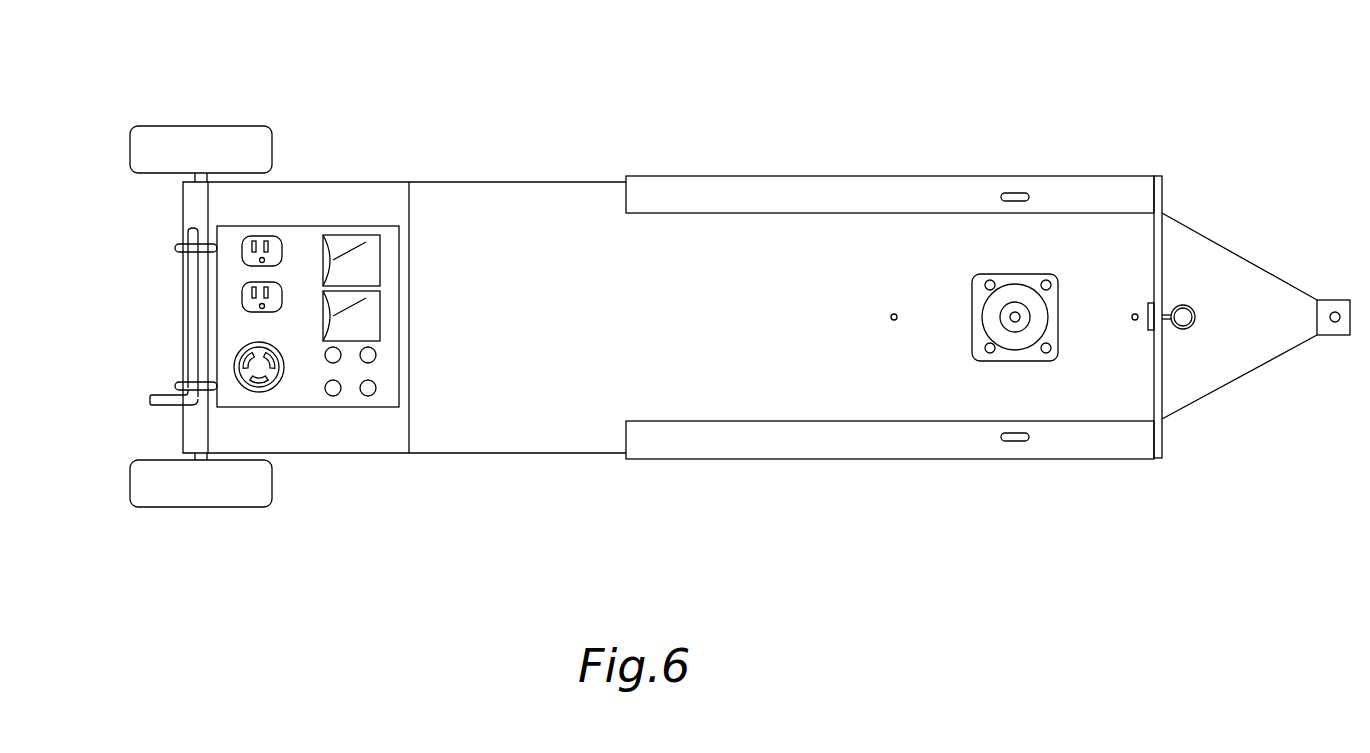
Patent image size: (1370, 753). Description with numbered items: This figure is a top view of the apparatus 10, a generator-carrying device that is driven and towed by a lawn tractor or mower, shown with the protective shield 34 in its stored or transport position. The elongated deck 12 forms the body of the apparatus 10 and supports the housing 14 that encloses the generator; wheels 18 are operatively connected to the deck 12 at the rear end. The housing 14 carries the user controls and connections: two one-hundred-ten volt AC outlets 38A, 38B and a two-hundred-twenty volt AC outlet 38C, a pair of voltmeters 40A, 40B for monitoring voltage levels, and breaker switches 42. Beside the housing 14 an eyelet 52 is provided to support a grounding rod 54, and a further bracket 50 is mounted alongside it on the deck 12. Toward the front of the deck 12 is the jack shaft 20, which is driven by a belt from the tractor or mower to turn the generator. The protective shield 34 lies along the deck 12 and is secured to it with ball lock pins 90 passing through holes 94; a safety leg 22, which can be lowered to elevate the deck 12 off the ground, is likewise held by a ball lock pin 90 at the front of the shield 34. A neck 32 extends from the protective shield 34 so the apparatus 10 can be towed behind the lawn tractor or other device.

The apparatus 10 is at (918, 86).
The deck 12 is at (570, 180).
The housing 14 is at (385, 228).
The wheels 18 is at (137, 136).
The jack shaft 20 is at (1010, 315).
The safety leg 22 is at (1150, 302).
The neck 32 is at (1245, 266).
The protective shield 34 is at (1110, 175).
The 110V AC outlet 38A is at (262, 242).
The 110V AC outlet 38B is at (241, 297).
The 220V AC outlet 38C is at (262, 391).
The voltmeter 40A is at (370, 249).
The voltmeter 40B is at (370, 302).
The breaker switches 42 is at (368, 370).
The upper mounting bracket 50 is at (175, 248).
The eyelet 52 is at (175, 386).
The grounding rod 54 is at (152, 400).
The ball lock pin 90 is at (1010, 191).
The holes 94 is at (891, 316).